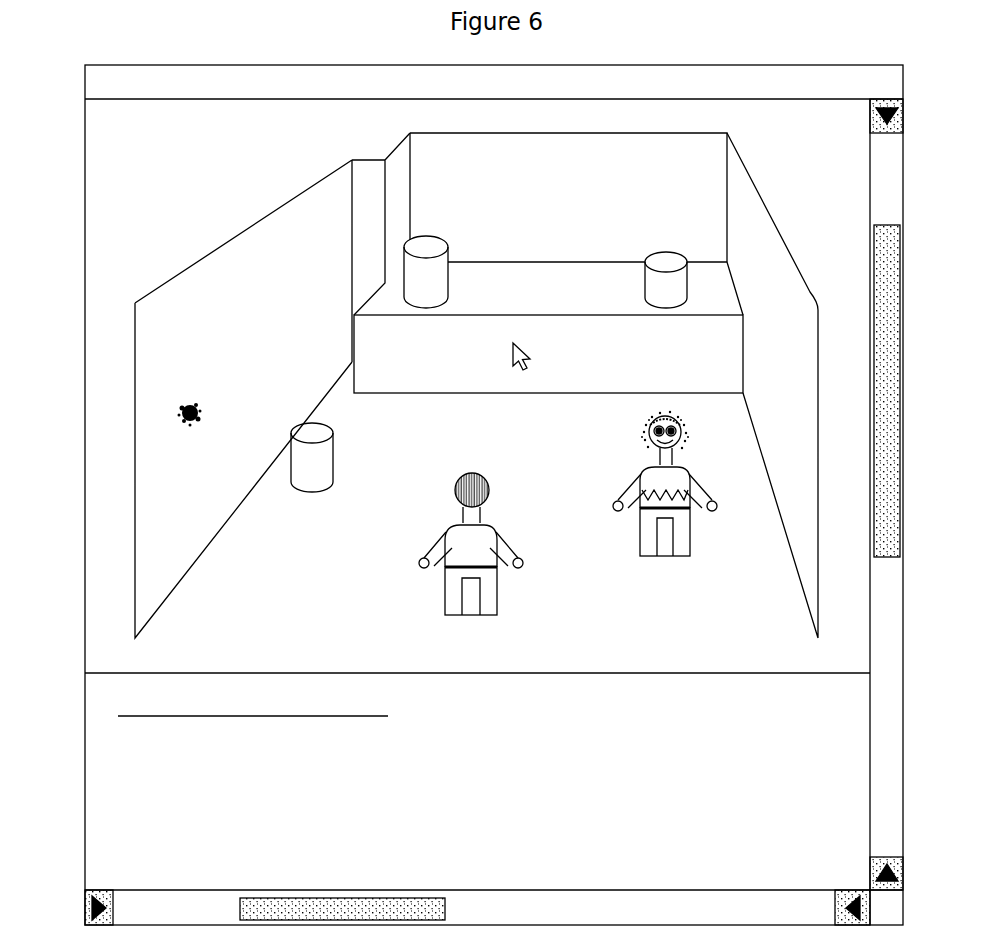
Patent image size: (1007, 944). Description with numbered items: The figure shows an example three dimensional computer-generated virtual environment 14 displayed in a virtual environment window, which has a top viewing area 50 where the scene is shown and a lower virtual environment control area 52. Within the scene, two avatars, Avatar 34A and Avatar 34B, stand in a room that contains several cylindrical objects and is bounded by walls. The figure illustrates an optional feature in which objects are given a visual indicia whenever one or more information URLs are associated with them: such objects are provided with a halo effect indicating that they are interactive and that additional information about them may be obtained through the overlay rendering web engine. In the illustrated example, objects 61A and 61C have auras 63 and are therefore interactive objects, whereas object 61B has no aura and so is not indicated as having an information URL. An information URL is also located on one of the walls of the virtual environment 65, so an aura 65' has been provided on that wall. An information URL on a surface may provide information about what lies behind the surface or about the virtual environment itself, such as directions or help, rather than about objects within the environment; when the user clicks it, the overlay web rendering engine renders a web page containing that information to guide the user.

The virtual environment 14 is at (182, 142).
The top viewing area 50 is at (100, 345).
The virtual environment control area 52 is at (100, 793).
The wall of the virtual environment 65 is at (272, 385).
The aura 65' is at (222, 388).
The object 61A is at (325, 463).
The object 61B is at (437, 245).
The object 61C is at (646, 278).
The aura 63 is at (489, 366).
The Avatar 34A is at (509, 586).
The Avatar 34B is at (702, 551).